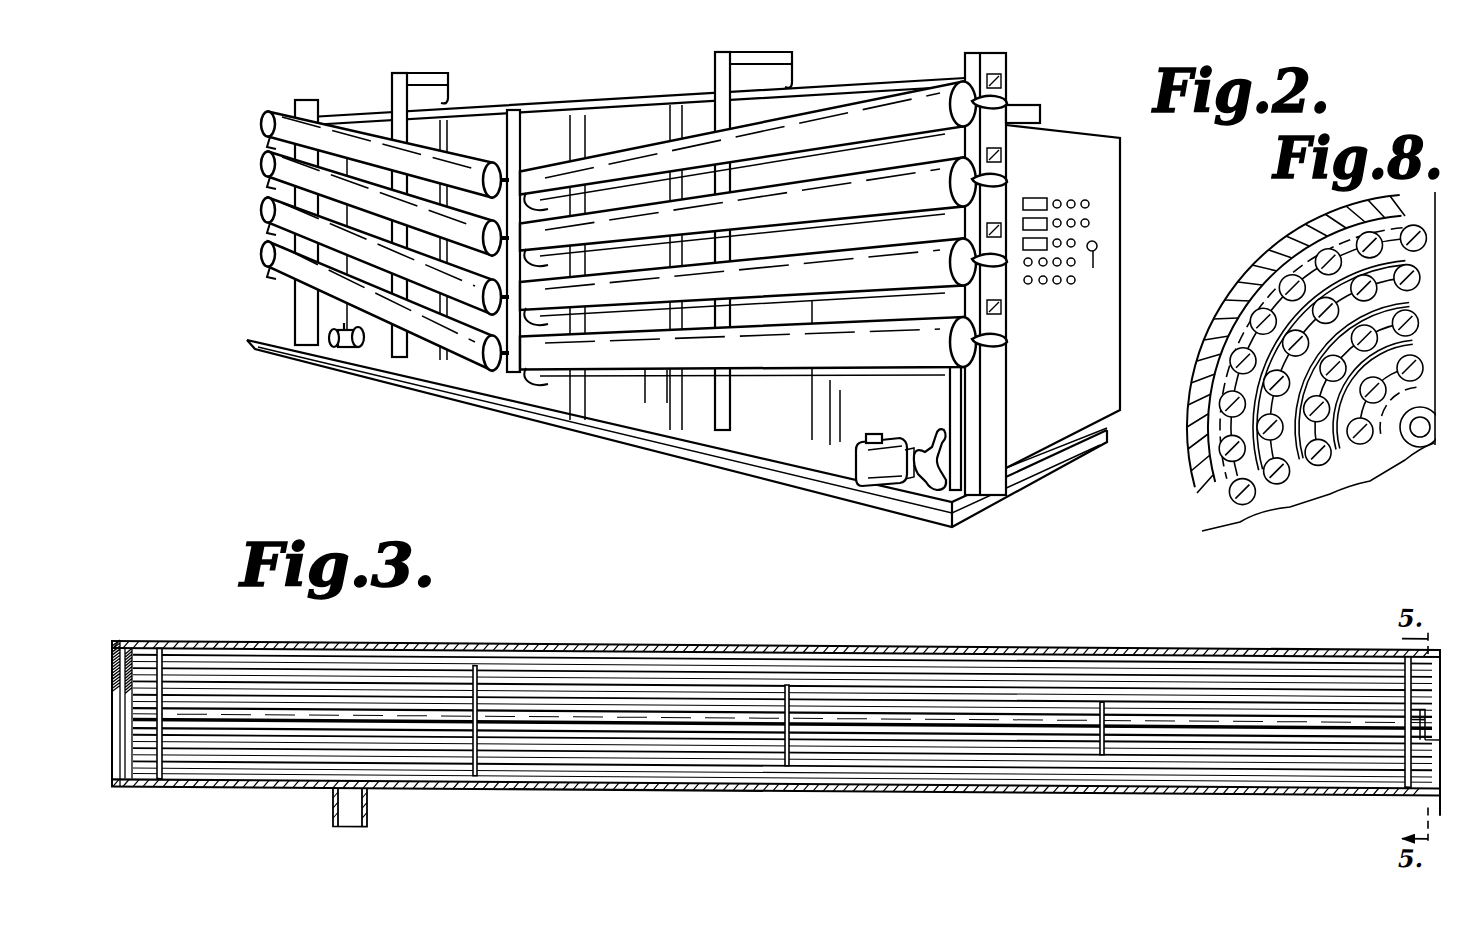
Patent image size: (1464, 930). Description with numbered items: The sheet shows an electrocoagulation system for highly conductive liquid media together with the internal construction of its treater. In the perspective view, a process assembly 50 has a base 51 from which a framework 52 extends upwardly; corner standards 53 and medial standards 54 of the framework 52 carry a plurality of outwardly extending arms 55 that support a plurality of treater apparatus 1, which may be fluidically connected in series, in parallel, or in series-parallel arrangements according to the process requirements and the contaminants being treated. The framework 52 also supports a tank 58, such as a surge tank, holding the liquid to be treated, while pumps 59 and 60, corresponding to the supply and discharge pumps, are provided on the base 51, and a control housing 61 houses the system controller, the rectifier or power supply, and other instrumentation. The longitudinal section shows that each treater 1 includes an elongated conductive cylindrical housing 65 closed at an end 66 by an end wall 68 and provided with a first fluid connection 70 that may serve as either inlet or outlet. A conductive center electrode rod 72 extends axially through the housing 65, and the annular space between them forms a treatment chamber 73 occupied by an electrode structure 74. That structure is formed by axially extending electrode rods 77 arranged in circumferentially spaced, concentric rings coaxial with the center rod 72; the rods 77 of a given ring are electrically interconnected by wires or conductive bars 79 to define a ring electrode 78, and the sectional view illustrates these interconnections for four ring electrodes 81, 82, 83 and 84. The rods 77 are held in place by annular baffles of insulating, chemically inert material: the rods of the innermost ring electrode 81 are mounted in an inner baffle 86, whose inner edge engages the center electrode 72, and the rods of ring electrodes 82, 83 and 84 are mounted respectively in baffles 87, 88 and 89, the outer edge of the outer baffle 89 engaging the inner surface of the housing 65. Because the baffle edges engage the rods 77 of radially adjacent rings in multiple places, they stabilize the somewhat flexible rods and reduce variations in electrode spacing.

In FIG. 2, the treater apparatus 1 is at (266, 108).
In FIG. 3, the treater apparatus 1 is at (558, 613).
In FIG. 8, the treater apparatus 1 is at (1186, 512).
In FIG. 2, the process assembly 50 is at (1042, 105).
In FIG. 2, the base 51 is at (985, 505).
In FIG. 2, the framework 52 is at (985, 46).
In FIG. 2, the corner standards 53 is at (293, 297).
In FIG. 2, the medial standards 54 is at (515, 375).
In FIG. 2, the arms 55 is at (268, 185).
In FIG. 2, the tank 58 is at (785, 412).
In FIG. 2, the pump 59 is at (340, 350).
In FIG. 2, the pump 60 is at (872, 462).
In FIG. 2, the control housing 61 is at (1119, 304).
In FIG. 3, the cylindrical housing 65 is at (719, 645).
In FIG. 8, the cylindrical housing 65 is at (1198, 470).
In FIG. 3, the end 66 is at (128, 641).
In FIG. 3, the end wall 68 is at (120, 786).
In FIG. 3, the first fluid connection 70 is at (333, 812).
In FIG. 3, the center electrode rod 72 is at (833, 715).
In FIG. 8, the center electrode rod 72 is at (1385, 450).
In FIG. 3, the treatment chamber 73 is at (1210, 718).
In FIG. 3, the electrode structure 74 is at (880, 782).
In FIG. 8, the electrode rods 77 is at (1327, 250).
In FIG. 8, the ring electrode 78 is at (1293, 274).
In FIG. 8, the conductive bars 79 is at (1386, 235).
In FIG. 8, the innermost ring electrode 81 is at (1362, 456).
In FIG. 8, the ring electrode 82 is at (1325, 482).
In FIG. 8, the ring electrode 83 is at (1275, 490).
In FIG. 8, the ring electrode 84 is at (1237, 506).
In FIG. 3, the inner baffle 86 is at (1103, 750).
In FIG. 8, the inner baffle 86 is at (1380, 468).
In FIG. 3, the baffle 87 is at (788, 772).
In FIG. 8, the baffle 87 is at (1312, 470).
In FIG. 3, the baffle 88 is at (476, 790).
In FIG. 8, the baffle 88 is at (1245, 305).
In FIG. 3, the outer baffle 89 is at (158, 786).
In FIG. 8, the outer baffle 89 is at (1290, 270).